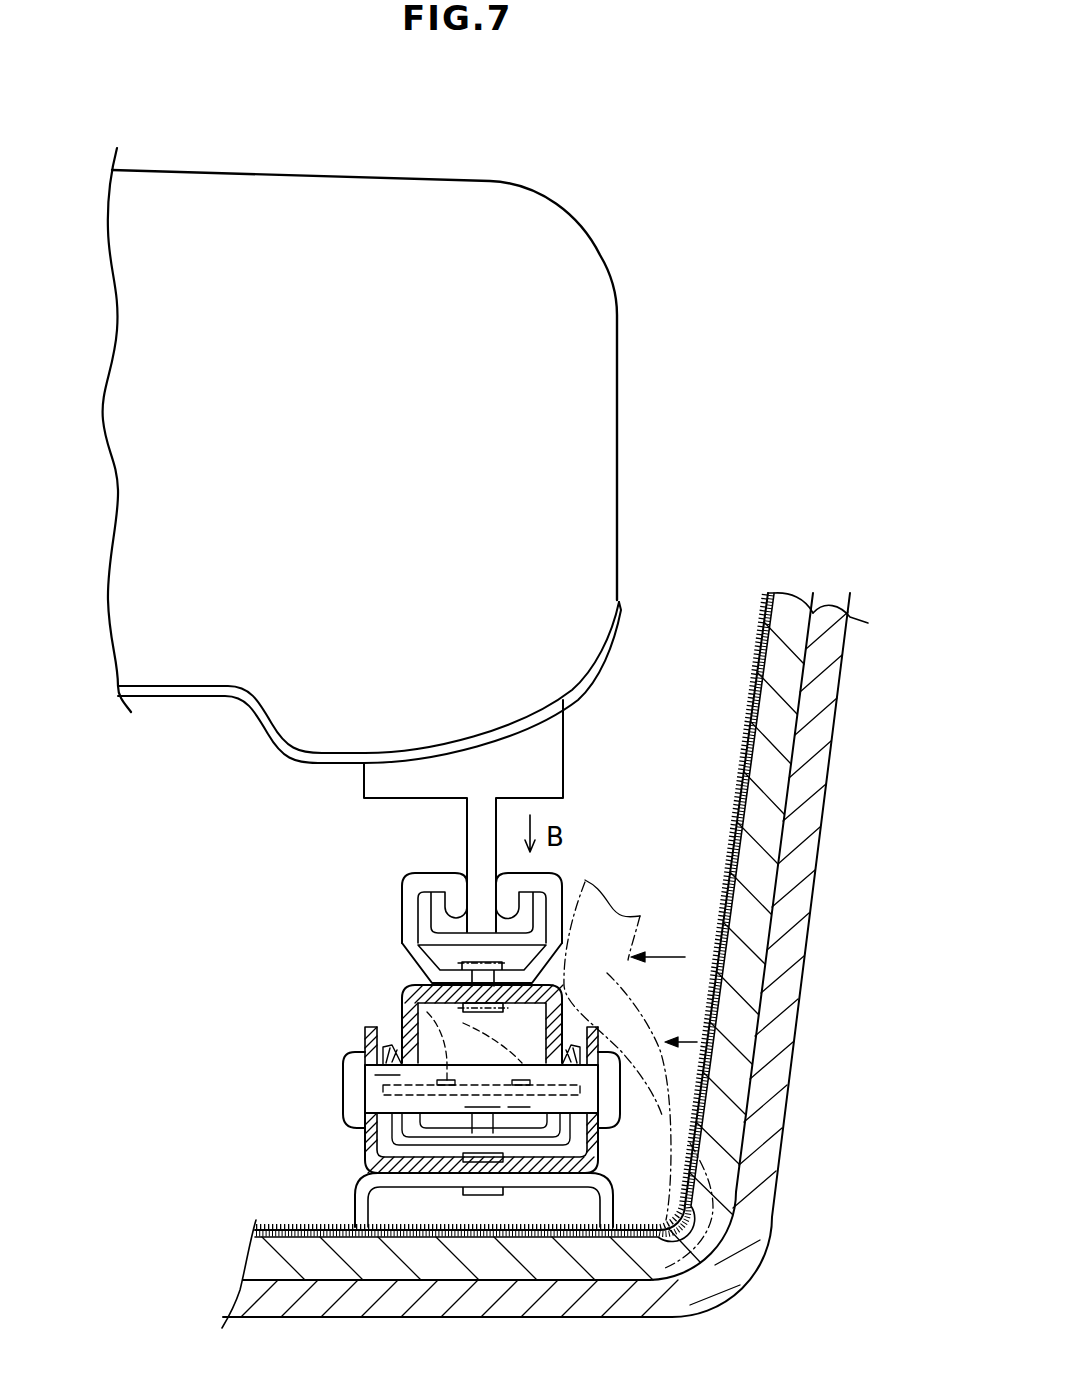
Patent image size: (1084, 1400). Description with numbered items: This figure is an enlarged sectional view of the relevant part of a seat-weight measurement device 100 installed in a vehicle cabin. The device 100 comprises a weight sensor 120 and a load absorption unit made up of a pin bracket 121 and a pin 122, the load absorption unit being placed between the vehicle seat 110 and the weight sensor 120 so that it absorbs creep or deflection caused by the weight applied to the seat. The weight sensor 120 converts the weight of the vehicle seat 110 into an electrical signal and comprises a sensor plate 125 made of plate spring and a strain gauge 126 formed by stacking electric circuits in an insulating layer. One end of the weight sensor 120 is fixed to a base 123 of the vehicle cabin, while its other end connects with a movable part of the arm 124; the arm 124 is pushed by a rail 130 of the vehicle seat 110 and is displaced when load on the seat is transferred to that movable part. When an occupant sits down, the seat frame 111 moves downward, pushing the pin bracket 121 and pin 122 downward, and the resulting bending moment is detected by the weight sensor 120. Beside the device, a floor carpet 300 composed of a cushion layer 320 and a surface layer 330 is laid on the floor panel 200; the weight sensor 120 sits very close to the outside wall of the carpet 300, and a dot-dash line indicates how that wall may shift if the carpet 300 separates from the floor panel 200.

The seat-weight measurement device 100 is at (758, 530).
The vehicle seat 110 is at (618, 452).
The seat frame 111 is at (563, 745).
The weight sensor 120 is at (532, 1052).
The pin bracket 121 is at (402, 990).
The pin 122 is at (356, 1078).
The base 123 is at (372, 1152).
The arm 124 is at (385, 1030).
The sensor plate 125 is at (385, 1090).
The strain gauge 126 is at (402, 1006).
The rail 130 is at (402, 905).
The floor panel 200 is at (780, 1038).
The floor carpet 300 is at (790, 908).
The cushion layer 320 is at (767, 842).
The surface layer 330 is at (750, 782).